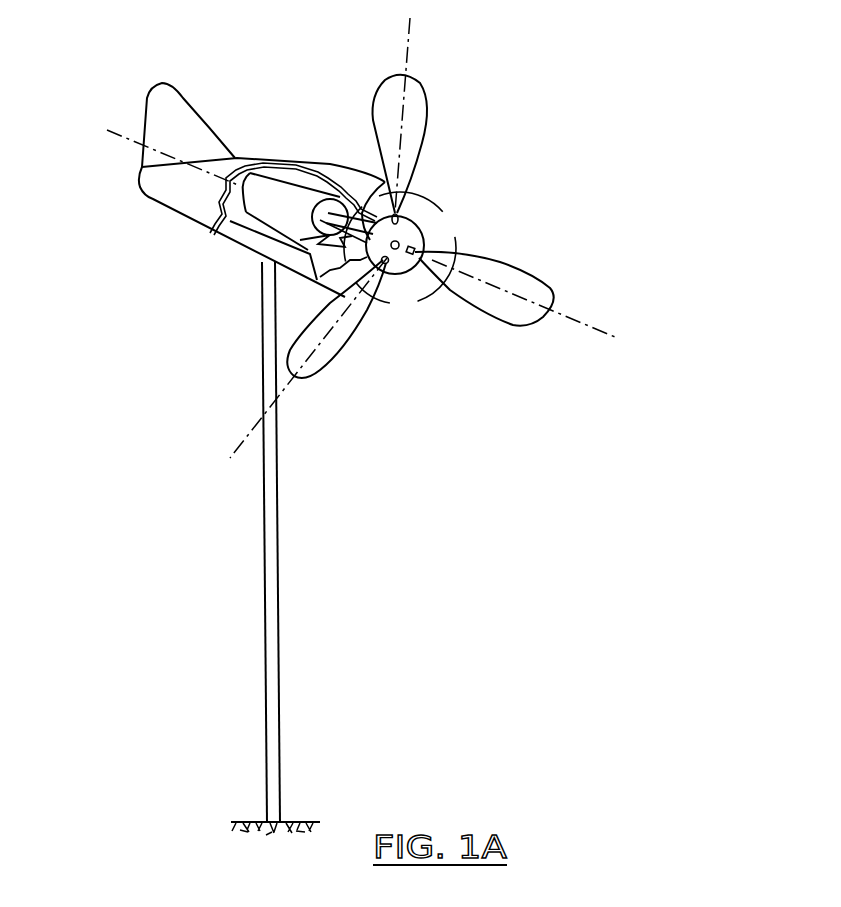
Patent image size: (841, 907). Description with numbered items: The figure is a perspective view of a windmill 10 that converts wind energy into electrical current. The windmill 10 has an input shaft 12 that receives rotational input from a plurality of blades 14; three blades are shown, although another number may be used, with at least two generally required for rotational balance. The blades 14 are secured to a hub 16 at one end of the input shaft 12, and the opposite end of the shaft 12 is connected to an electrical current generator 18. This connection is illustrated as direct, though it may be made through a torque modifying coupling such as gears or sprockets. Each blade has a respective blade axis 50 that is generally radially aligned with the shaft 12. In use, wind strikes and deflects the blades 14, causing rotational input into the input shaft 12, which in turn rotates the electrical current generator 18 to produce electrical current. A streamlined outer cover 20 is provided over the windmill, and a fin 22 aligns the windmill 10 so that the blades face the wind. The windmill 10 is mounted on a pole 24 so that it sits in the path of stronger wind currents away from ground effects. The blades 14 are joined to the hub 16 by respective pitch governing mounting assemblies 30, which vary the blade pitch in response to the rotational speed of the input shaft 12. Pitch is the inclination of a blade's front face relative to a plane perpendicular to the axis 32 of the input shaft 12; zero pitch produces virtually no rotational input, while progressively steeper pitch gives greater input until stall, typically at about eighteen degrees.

The windmill 10 is at (115, 404).
The input shaft 12 is at (361, 212).
The blades 14 is at (417, 123).
The hub 16 is at (413, 230).
The electrical current generator 18 is at (273, 210).
The streamlined outer cover 20 is at (173, 195).
The fin 22 is at (155, 115).
The pole 24 is at (277, 590).
The pitch governing mounting assemblies 30 is at (413, 208).
The axis of the input shaft 32 is at (598, 327).
The blade axis 50 is at (412, 42).